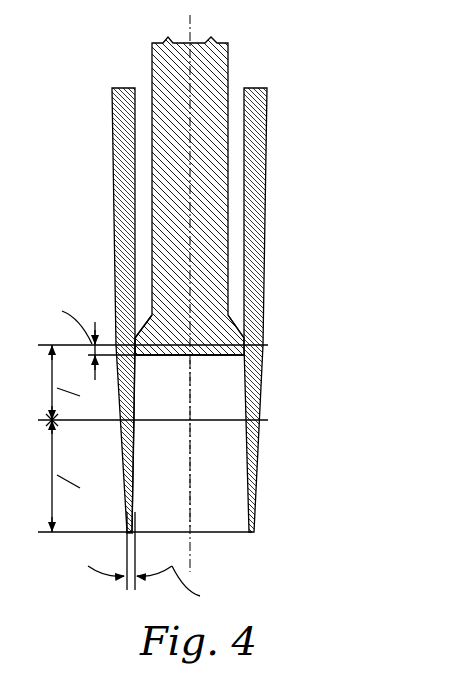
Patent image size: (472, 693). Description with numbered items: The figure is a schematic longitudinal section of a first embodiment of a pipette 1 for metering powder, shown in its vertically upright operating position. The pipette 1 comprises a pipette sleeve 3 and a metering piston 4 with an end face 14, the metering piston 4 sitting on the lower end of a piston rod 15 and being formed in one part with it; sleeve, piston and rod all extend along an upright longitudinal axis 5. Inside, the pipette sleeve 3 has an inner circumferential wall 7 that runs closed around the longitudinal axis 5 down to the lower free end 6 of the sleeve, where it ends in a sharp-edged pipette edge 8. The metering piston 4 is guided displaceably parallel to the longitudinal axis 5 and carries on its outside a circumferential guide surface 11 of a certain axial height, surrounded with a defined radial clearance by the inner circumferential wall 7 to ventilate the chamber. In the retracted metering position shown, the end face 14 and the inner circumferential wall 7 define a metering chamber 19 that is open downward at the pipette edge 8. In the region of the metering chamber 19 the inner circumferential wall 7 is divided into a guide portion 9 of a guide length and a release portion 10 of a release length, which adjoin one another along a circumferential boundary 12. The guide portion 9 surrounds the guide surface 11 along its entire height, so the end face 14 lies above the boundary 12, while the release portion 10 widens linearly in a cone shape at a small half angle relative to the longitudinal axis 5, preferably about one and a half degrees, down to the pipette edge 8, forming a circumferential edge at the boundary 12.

The pipette 1 is at (281, 144).
The pipette sleeve 3 is at (120, 162).
The longitudinal axis 5 is at (190, 157).
The piston rod 15 is at (215, 210).
The metering piston 4 is at (221, 347).
The circumferential guide surface 11 is at (134, 345).
The end face 14 is at (207, 358).
The guide portion 9 is at (143, 390).
The boundary 12 is at (205, 421).
The inner circumferential wall 7 is at (142, 453).
The release portion 10 is at (134, 494).
The metering chamber 19 is at (233, 506).
The pipette edge 8 is at (122, 535).
The free end 6 is at (121, 537).